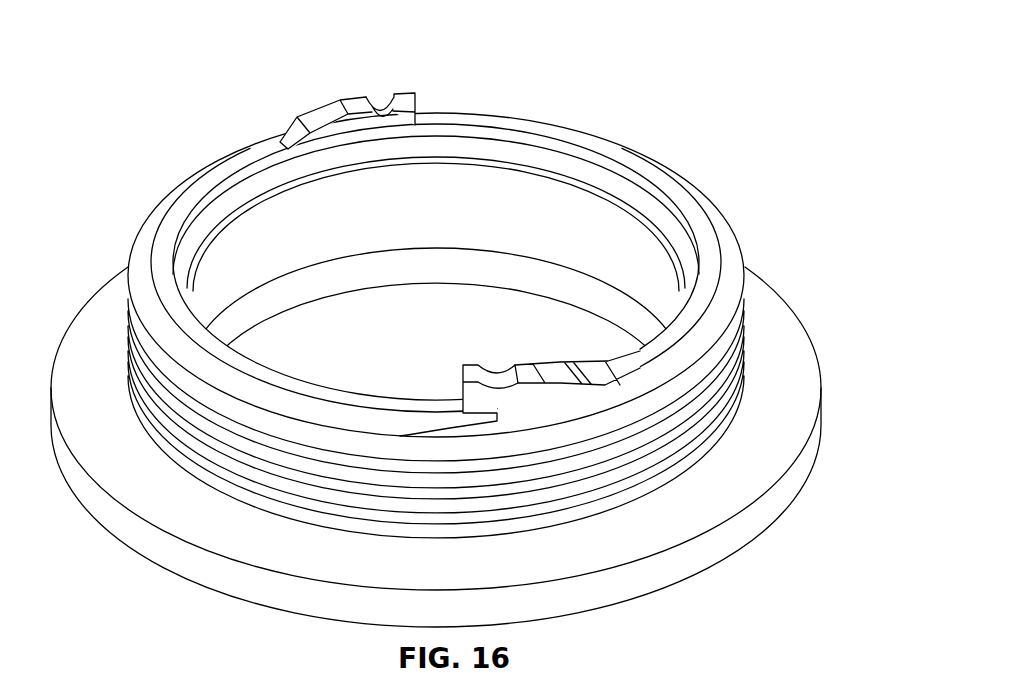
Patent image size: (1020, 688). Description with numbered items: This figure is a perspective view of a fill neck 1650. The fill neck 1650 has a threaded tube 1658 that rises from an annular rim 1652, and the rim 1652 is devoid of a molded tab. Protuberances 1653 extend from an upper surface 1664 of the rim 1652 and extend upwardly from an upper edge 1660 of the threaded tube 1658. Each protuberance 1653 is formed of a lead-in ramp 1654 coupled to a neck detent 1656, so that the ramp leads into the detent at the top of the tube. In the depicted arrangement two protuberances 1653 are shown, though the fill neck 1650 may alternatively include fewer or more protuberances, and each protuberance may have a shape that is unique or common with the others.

The fill neck 1650 is at (480, 316).
The rim 1652 is at (800, 467).
The protuberance 1653 is at (408, 221).
The lead-in ramp 1654 is at (325, 107).
The neck detent 1656 is at (380, 100).
The threaded tube 1658 is at (735, 288).
The upper edge 1660 is at (203, 190).
The upper surface 1664 is at (793, 350).